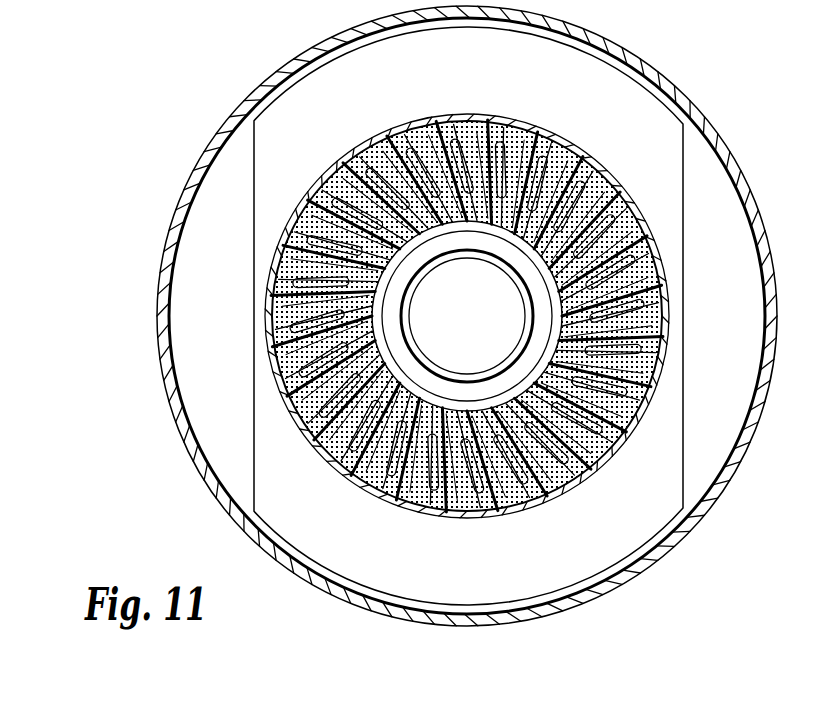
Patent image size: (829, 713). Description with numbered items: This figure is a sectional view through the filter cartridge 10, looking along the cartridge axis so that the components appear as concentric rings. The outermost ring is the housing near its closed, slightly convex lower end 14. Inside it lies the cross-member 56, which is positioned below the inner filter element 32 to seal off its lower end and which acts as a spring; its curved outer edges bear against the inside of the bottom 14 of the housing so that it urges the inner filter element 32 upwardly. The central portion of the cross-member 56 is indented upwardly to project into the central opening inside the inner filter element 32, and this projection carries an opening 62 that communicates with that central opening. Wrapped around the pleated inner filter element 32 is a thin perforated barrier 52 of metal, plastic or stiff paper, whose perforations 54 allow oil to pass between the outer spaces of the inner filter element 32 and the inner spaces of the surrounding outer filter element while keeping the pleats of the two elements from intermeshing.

The filter cartridge 10 is at (156, 181).
The lower end 14 is at (165, 250).
The cross-member 56 is at (645, 147).
The inner filter element 32 is at (270, 346).
The perforated barrier 52 is at (668, 303).
The perforations 54 is at (666, 320).
The opening 62 is at (408, 345).